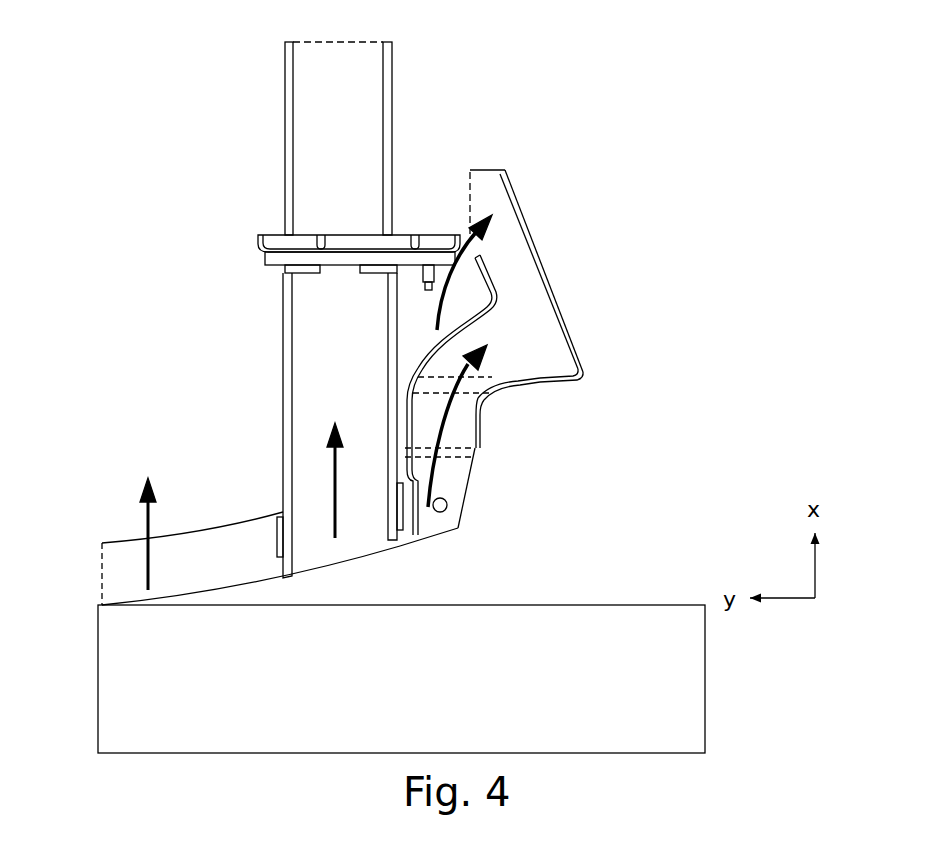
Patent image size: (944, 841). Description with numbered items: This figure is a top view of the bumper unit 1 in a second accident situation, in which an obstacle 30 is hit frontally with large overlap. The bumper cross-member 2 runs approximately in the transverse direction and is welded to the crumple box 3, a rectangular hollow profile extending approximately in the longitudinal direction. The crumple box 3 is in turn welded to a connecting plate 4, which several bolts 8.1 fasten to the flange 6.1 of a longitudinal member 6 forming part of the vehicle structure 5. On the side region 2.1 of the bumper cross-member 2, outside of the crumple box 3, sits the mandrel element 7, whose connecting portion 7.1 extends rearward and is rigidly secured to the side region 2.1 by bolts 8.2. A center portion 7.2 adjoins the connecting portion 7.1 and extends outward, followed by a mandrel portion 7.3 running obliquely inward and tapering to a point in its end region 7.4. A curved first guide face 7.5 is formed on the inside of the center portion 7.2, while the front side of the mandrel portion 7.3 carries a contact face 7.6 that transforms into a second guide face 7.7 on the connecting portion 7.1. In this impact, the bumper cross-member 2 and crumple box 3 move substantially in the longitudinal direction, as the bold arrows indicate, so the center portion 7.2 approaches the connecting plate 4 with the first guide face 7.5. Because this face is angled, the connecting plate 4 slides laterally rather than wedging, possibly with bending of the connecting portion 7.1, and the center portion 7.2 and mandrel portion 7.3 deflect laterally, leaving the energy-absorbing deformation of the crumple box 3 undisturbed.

The bumper unit 1 is at (172, 168).
The bumper cross-member 2 is at (160, 592).
The side region of the bumper cross-member 2.1 is at (450, 544).
The crumple box 3 is at (313, 384).
The connecting plate 4 is at (357, 268).
The vehicle structure 5 is at (226, 68).
The longitudinal member 6 is at (294, 105).
The flange of the longitudinal member 6.1 is at (276, 233).
The mandrel element 7 is at (533, 353).
The connecting portion 7.1 is at (386, 420).
The center portion 7.2 is at (518, 400).
The mandrel portion 7.3 is at (565, 212).
The end region 7.4 is at (521, 166).
The first guide face 7.5 is at (495, 293).
The contact face 7.6 is at (567, 388).
The second guide face 7.7 is at (496, 430).
The bolts 8.1 is at (410, 305).
The bolts 8.2 is at (447, 505).
The obstacle 30 is at (705, 676).